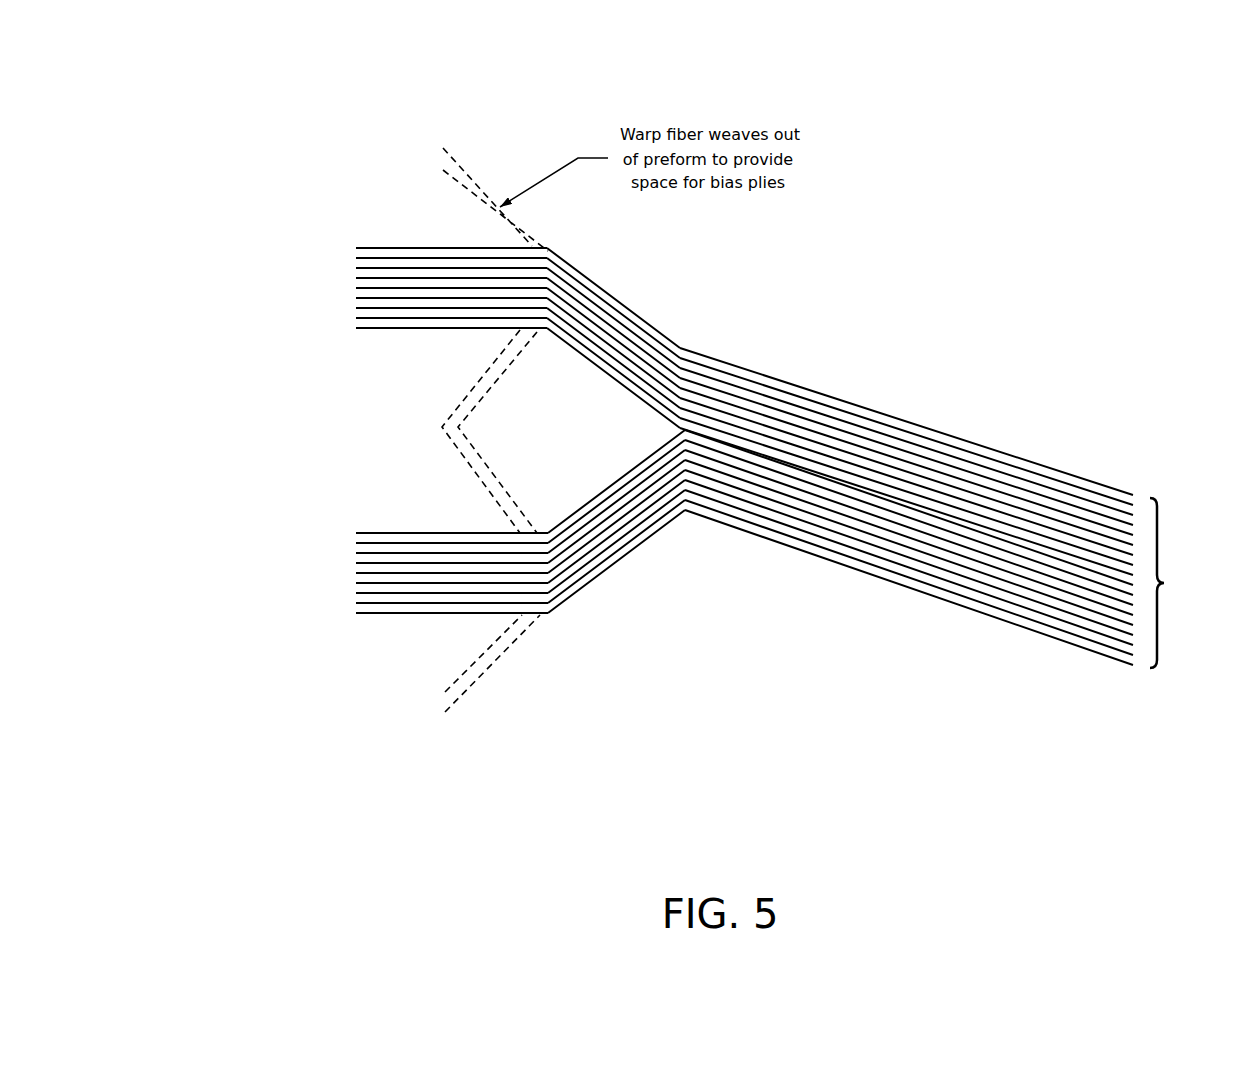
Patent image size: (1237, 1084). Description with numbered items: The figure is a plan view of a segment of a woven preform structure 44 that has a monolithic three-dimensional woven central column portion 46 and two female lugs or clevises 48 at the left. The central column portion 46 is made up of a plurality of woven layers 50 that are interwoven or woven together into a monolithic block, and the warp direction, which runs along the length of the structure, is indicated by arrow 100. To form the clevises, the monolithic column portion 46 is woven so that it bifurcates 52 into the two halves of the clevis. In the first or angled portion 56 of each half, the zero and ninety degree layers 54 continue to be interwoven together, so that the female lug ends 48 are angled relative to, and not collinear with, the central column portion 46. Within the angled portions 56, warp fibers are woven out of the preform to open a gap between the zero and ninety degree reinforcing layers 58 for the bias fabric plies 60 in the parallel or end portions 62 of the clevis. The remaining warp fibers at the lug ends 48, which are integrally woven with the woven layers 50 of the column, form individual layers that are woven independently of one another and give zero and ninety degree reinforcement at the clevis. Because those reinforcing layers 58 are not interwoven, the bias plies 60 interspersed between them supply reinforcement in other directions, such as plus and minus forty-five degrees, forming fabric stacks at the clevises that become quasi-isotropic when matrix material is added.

The structure 44 is at (1003, 360).
The central column portion 46 is at (1046, 590).
The female lug ends 48 is at (375, 465).
The woven layers 50 is at (950, 554).
The bifurcation 52 is at (909, 419).
The 0°/90° layers 54 is at (625, 332).
The angled portion 56 is at (602, 372).
The 0°/90° reinforcing layers 58 is at (377, 345).
The bias fabric plies 60 is at (382, 236).
The end portions 62 is at (400, 253).
The arrow 100 is at (873, 640).